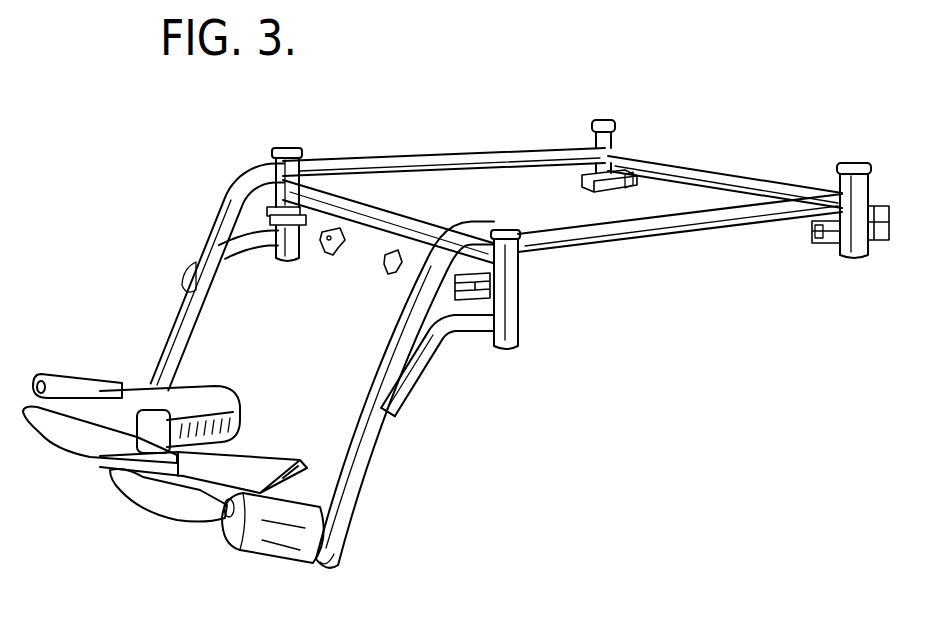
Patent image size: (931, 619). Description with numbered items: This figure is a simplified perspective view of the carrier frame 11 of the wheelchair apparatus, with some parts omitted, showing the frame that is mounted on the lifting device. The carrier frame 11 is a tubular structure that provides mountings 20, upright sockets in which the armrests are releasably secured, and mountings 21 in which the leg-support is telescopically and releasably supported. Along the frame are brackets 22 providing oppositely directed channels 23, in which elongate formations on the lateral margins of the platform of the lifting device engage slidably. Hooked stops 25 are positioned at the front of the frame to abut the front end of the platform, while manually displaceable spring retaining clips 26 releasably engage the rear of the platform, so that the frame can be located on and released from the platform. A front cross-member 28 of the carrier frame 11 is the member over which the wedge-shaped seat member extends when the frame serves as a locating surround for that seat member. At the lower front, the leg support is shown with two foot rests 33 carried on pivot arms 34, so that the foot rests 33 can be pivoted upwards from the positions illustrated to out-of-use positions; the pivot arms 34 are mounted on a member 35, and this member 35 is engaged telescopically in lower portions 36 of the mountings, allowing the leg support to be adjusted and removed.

The carrier frame 11 is at (498, 144).
The mountings 20 is at (293, 148).
The mountings 21 is at (268, 252).
The brackets 22 is at (587, 180).
The channels 23 is at (814, 230).
The hooked stops 25 is at (388, 272).
The spring retaining clips 26 is at (636, 181).
The front cross-member 28 is at (382, 216).
The foot rests 33 is at (67, 443).
The pivot arms 34 is at (227, 523).
The member 35 is at (342, 535).
The lower portions 36 is at (378, 455).